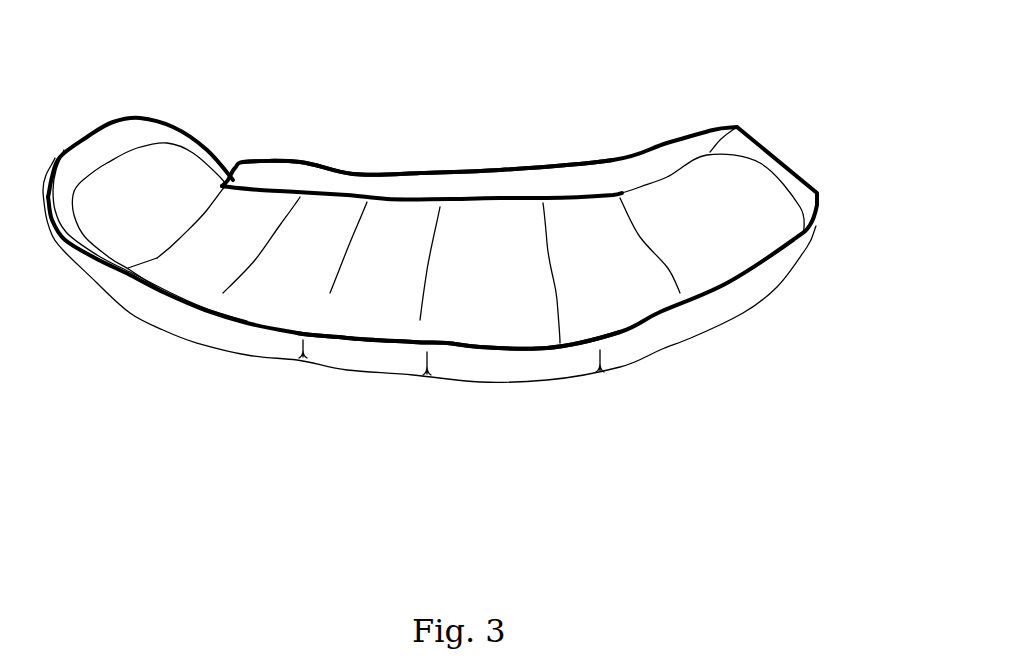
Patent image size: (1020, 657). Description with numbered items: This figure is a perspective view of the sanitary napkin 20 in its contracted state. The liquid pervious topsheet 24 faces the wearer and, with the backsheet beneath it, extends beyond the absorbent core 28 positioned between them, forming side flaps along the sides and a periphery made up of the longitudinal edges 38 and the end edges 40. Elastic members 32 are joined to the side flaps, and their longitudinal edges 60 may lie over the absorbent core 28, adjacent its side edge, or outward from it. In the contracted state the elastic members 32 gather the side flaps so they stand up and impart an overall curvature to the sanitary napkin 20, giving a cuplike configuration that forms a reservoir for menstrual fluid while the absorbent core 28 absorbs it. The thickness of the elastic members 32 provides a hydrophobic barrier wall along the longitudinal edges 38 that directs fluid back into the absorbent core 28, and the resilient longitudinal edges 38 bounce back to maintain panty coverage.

The sanitary napkin 20 is at (243, 126).
The liquid pervious topsheet 24 is at (583, 220).
The absorbent core 28 is at (187, 270).
The elastic members 32 is at (383, 187).
The longitudinal edges 38 is at (530, 172).
The end edges 40 is at (92, 137).
The longitudinal edges of the elastic member 60 is at (500, 200).